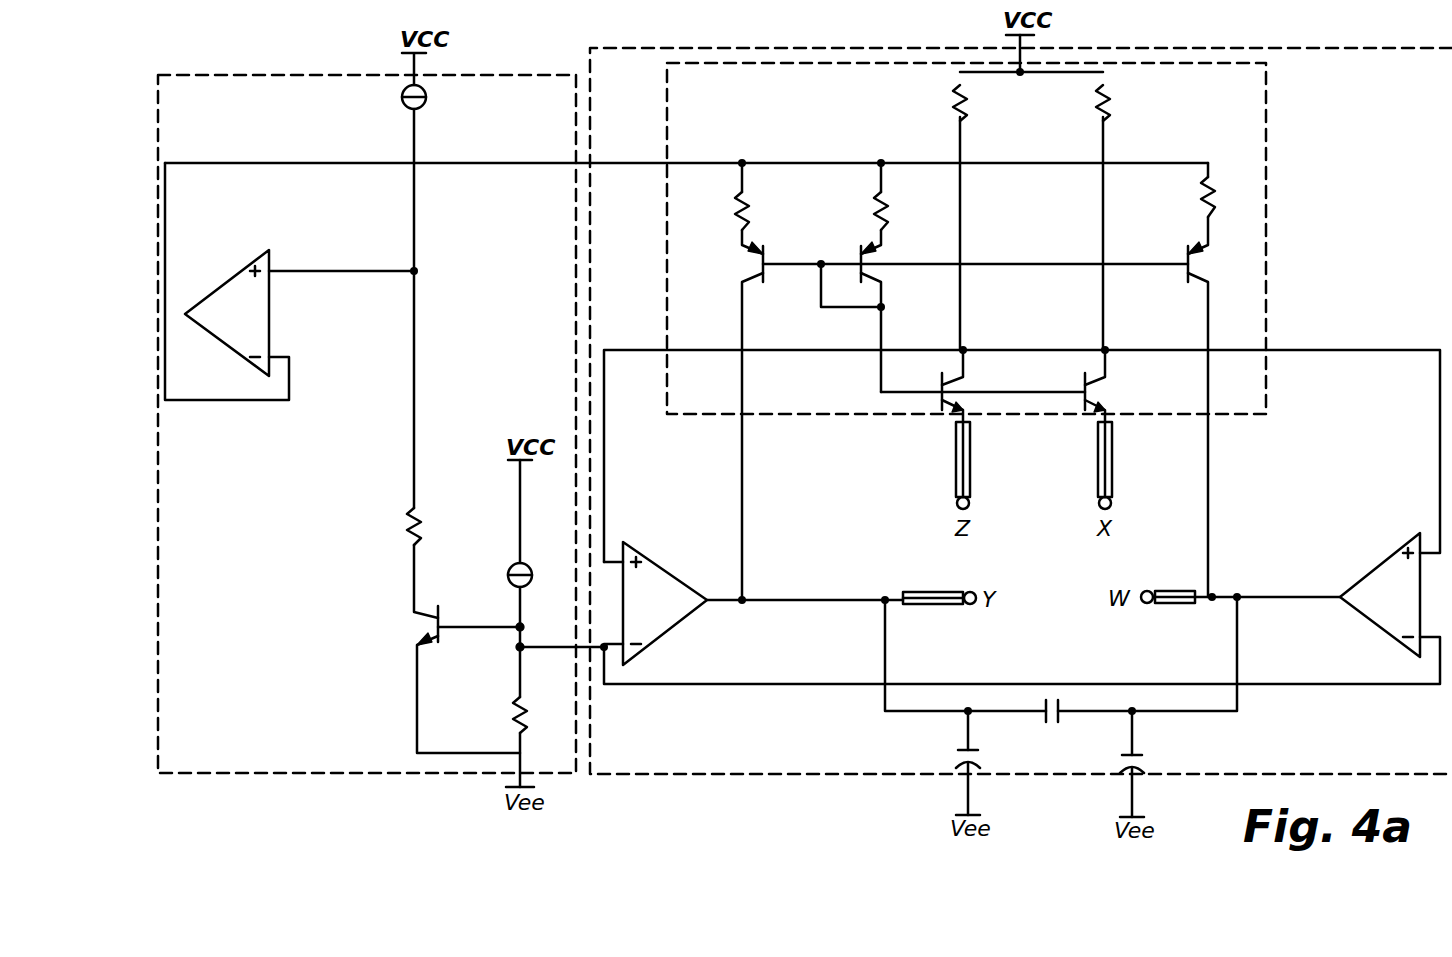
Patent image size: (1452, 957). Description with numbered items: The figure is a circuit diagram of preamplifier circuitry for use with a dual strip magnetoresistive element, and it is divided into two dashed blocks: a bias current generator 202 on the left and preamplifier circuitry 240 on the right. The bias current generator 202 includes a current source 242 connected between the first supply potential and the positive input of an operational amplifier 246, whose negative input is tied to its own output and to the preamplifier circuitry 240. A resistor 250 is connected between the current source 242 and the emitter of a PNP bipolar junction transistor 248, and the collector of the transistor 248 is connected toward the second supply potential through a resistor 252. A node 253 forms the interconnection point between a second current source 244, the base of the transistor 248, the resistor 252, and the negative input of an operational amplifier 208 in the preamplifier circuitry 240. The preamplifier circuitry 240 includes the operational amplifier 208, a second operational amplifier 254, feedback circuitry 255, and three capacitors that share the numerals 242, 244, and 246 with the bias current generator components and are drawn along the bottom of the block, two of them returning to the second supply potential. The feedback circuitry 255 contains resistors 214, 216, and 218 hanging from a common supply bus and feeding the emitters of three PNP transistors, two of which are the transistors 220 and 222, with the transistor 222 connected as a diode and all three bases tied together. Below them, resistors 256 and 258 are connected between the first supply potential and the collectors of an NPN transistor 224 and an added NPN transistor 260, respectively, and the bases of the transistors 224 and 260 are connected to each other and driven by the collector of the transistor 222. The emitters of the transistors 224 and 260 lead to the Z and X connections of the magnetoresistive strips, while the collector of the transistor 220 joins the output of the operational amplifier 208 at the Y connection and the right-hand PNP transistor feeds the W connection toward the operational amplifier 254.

The bias current generator 202 is at (311, 75).
The preamplifier circuitry 240 is at (610, 48).
The feedback circuitry 255 is at (667, 245).
The current source 242 is at (425, 102).
The current source 244 is at (508, 567).
The operational amplifier 246 is at (237, 276).
The resistor 250 is at (408, 527).
The bipolar junction transistor 248 is at (428, 633).
The node 253 is at (517, 648).
The resistor 252 is at (515, 712).
The resistor 214 is at (749, 204).
The resistor 216 is at (887, 204).
The resistor 218 is at (1203, 200).
The resistor 256 is at (966, 100).
The resistor 258 is at (1115, 96).
The bipolar junction transistor 220 is at (756, 280).
The bipolar junction transistor 222 is at (878, 284).
The bipolar junction transistor 224 is at (943, 382).
The NPN bipolar junction transistor 260 is at (1100, 370).
The operational amplifier 208 is at (650, 548).
The operational amplifier 254 is at (1374, 567).